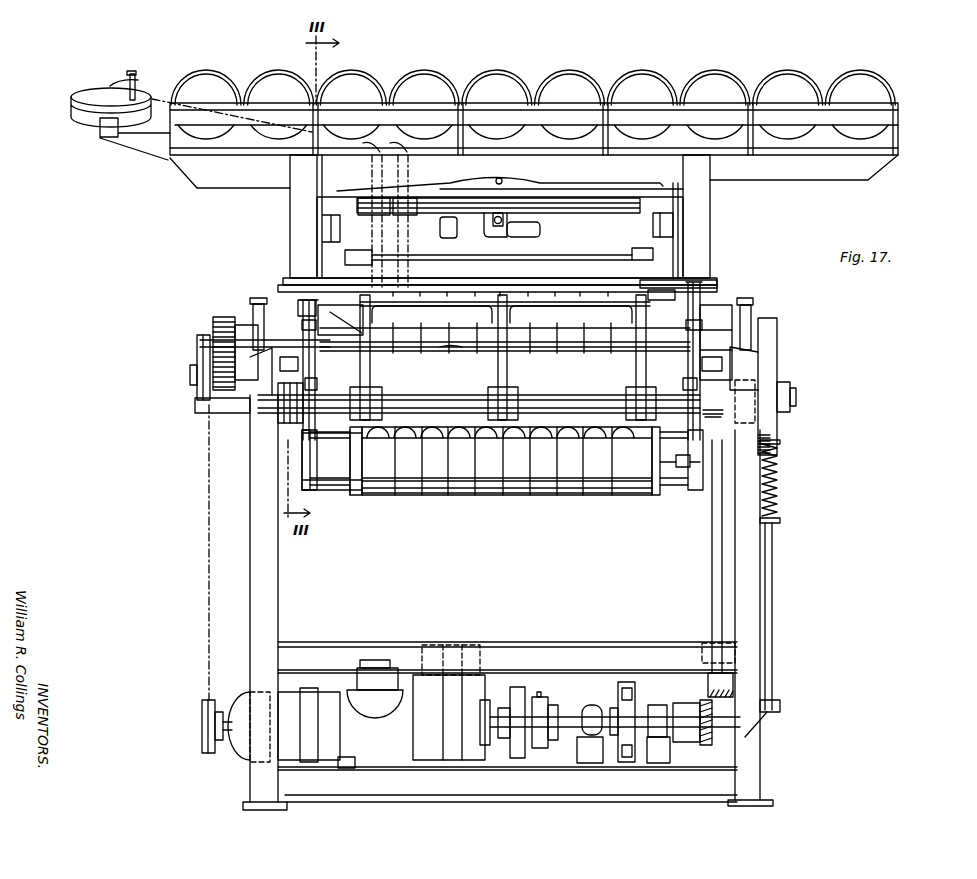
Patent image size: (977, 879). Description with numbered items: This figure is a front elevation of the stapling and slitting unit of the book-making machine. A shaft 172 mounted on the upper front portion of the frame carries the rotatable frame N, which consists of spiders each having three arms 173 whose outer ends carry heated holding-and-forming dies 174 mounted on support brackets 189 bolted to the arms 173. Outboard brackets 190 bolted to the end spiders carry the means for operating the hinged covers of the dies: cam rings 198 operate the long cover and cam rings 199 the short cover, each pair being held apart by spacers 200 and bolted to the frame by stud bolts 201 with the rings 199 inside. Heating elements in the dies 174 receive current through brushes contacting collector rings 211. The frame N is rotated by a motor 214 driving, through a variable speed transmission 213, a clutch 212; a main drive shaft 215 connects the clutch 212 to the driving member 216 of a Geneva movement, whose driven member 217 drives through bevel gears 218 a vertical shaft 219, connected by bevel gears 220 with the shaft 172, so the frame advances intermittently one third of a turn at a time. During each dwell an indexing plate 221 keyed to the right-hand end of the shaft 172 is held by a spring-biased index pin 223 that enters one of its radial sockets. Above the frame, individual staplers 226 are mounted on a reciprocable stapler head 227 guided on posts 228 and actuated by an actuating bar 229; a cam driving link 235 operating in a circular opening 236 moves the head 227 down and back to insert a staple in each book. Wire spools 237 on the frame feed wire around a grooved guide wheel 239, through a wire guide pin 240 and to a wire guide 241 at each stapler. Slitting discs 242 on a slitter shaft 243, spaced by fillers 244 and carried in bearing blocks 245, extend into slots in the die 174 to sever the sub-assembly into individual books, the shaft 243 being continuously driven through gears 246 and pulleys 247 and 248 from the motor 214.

The shaft 172 is at (543, 395).
The arms 173 is at (369, 378).
The heated holding-and-forming dies 174 is at (486, 510).
The support brackets 189 is at (446, 305).
The outboard brackets 190 is at (685, 310).
The cam rings 198 is at (316, 338).
The cam rings 199 is at (316, 356).
The spacers 200 is at (317, 382).
The stud bolts 201 is at (295, 370).
The collector rings 211 is at (292, 415).
The clutch 212 is at (520, 750).
The variable speed transmission 213 is at (375, 760).
The motor 214 is at (285, 753).
The main drive shaft 215 is at (572, 735).
The driving member 216 is at (613, 740).
The driven member 217 is at (628, 752).
The bevel gears 218 is at (706, 698).
The vertical shaft 219 is at (714, 564).
The bevel gears 220 is at (745, 426).
The indexing plate 221 is at (774, 363).
The index pin 223 is at (780, 496).
The staplers 226 is at (378, 225).
The stapler head 227 is at (673, 250).
The posts 228 is at (673, 222).
The actuating bar 229 is at (670, 198).
The cam driving link 235 is at (537, 221).
The circular opening 236 is at (540, 234).
The wire spools 237 is at (866, 74).
The grooved guide wheel 239 is at (70, 105).
The wire guide pin 240 is at (136, 80).
The wire guide 241 is at (378, 170).
The slitting discs 242 is at (404, 348).
The slitter shaft 243 is at (297, 320).
The fillers 244 is at (462, 350).
The bearing blocks 245 is at (252, 310).
The gears 246 is at (214, 322).
The pulley 247 is at (197, 350).
The pulley 248 is at (201, 725).